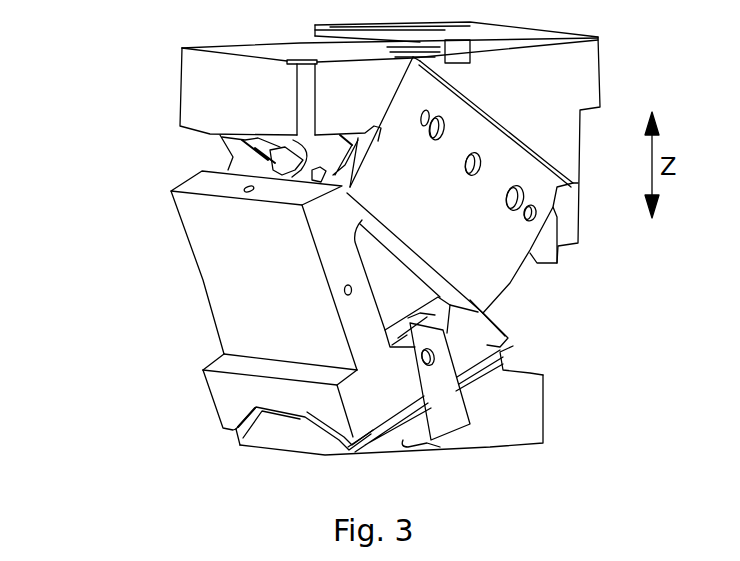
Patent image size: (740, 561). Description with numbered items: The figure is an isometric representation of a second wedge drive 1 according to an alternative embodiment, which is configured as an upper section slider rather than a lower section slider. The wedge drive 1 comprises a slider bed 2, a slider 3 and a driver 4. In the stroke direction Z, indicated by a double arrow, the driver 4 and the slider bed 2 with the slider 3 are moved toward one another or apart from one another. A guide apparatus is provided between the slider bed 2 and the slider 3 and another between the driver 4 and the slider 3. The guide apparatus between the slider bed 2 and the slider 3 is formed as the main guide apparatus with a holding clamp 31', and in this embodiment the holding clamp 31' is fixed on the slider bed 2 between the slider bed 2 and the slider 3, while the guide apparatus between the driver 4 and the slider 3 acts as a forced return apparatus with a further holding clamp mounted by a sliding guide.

The wedge drive 1 is at (75, 20).
The slider bed 2 is at (597, 57).
The slider 3 is at (180, 212).
The driver 4 is at (535, 393).
The holding clamp 31' is at (460, 202).